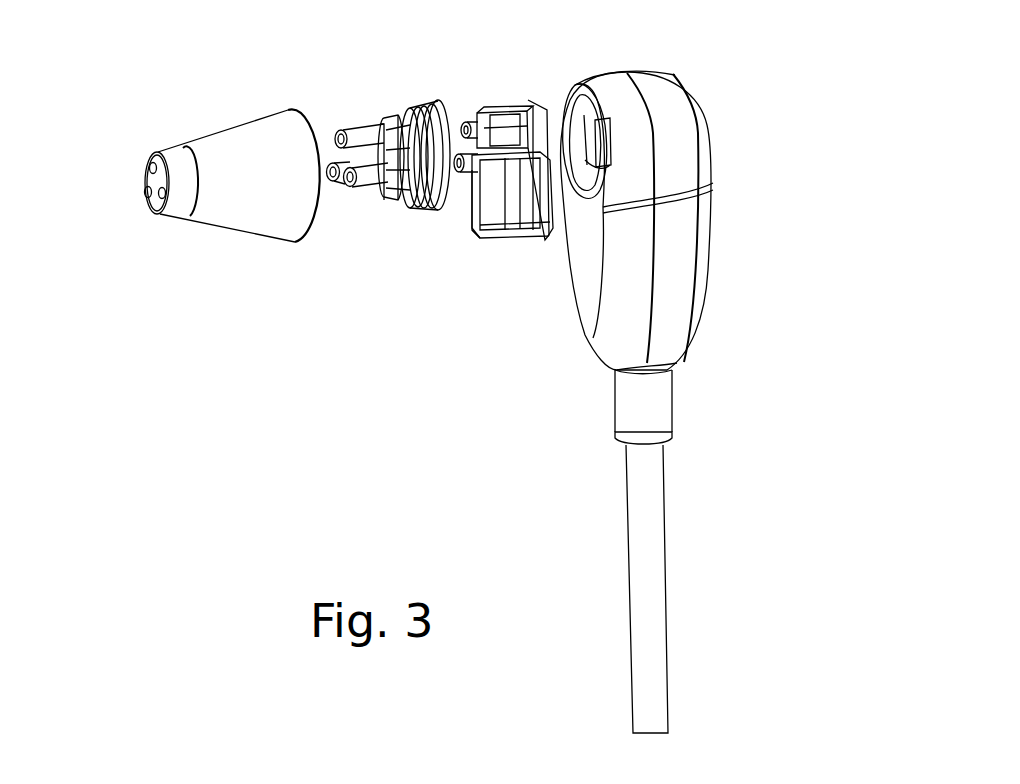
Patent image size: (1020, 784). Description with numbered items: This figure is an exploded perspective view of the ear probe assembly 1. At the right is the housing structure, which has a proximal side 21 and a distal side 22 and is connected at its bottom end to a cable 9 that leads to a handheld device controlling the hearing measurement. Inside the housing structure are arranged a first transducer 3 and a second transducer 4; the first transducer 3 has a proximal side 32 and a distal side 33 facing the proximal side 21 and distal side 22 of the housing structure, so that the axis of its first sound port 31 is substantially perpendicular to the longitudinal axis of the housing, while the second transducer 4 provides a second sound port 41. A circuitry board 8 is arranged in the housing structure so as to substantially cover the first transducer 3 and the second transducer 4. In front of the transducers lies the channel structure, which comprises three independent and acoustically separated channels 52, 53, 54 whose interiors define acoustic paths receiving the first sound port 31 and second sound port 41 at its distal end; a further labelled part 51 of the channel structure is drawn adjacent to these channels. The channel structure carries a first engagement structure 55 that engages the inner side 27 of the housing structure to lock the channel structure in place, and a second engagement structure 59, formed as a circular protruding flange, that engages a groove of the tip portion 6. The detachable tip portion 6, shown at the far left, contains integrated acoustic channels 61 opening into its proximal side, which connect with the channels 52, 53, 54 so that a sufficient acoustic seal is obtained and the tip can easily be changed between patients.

The ear probe assembly 1 is at (737, 72).
The first transducer 3 is at (500, 115).
The second transducer 4 is at (533, 237).
The tip portion 6 is at (230, 227).
The circuitry board 8 is at (543, 127).
The cable 9 is at (655, 517).
The proximal side 21 is at (580, 313).
The distal side 22 is at (707, 273).
The inner side 27 is at (583, 120).
The first sound port 31 is at (462, 124).
The proximal side 32 is at (461, 185).
The distal side 33 is at (577, 84).
The second sound port 41 is at (473, 220).
The first sound tube 51 is at (347, 186).
The channel 52 is at (370, 198).
The channel 53 is at (363, 128).
The channel 54 is at (340, 157).
The first engagement structure 55 is at (415, 102).
The second engagement structure 59 is at (392, 128).
The acoustic channels 61 is at (147, 166).